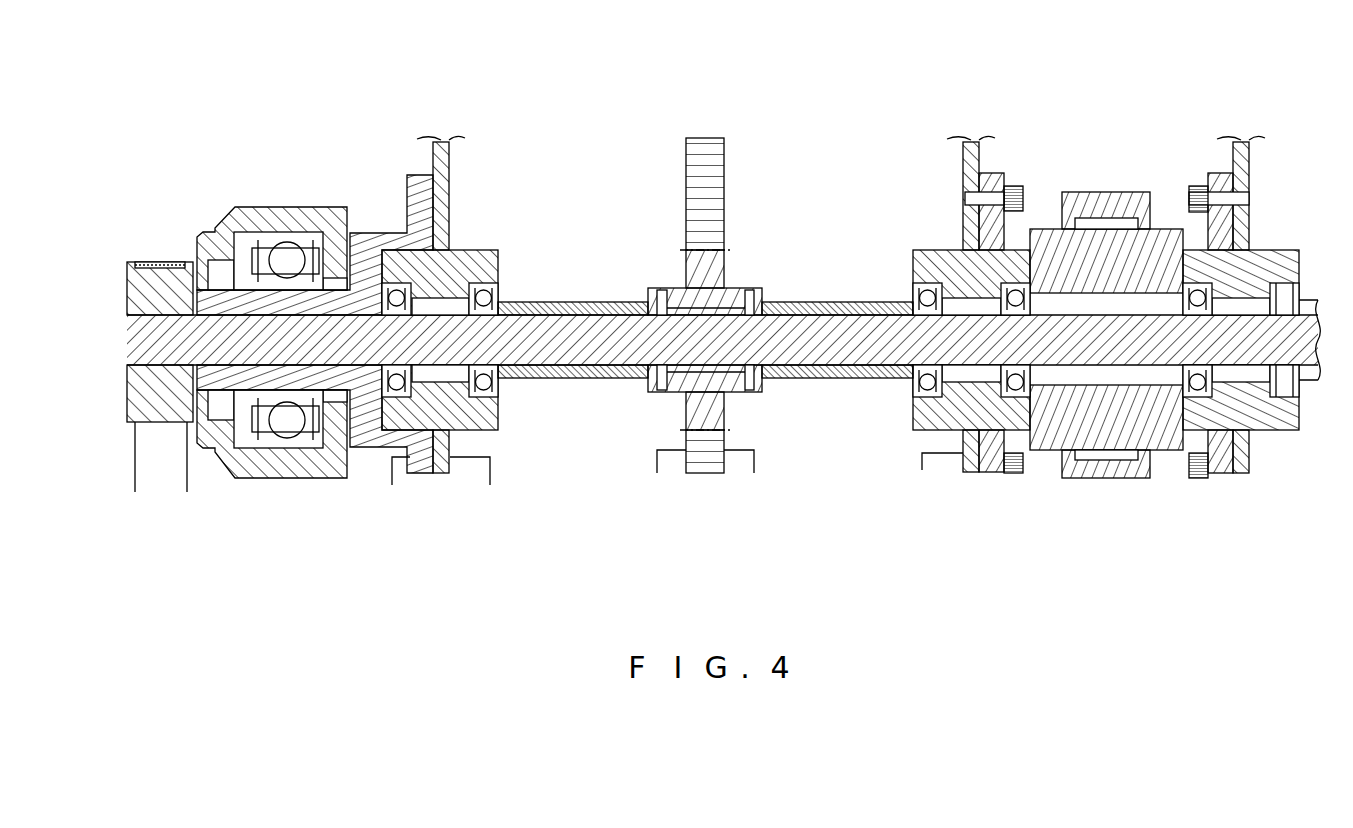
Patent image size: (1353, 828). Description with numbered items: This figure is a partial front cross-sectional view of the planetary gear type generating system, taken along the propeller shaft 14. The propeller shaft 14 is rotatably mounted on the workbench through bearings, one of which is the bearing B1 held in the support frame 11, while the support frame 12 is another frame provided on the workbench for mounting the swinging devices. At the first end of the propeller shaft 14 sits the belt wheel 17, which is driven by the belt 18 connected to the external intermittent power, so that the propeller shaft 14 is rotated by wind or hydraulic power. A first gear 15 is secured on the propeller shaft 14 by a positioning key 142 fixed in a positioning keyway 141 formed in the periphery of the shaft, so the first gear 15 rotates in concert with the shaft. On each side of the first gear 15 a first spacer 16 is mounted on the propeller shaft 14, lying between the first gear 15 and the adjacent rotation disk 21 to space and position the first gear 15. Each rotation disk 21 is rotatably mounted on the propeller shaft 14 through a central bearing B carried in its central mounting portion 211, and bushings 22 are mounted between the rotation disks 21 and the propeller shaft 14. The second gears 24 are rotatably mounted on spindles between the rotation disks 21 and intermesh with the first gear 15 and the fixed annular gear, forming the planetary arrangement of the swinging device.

The support frame 11 is at (282, 470).
The support frame 12 is at (1104, 470).
The propeller shaft 14 is at (612, 324).
The positioning keyway 141 is at (681, 396).
The positioning key 142 is at (717, 307).
The first gear 15 is at (710, 273).
The first spacer 16 is at (553, 374).
The belt wheel 17 is at (160, 263).
The belt 18 is at (140, 270).
The rotation disk 21 is at (442, 148).
The central mounting portion 211 is at (462, 265).
The bushing 22 is at (388, 243).
The second gear 24 is at (710, 152).
The central bearing B is at (487, 297).
The bearing B1 is at (287, 254).